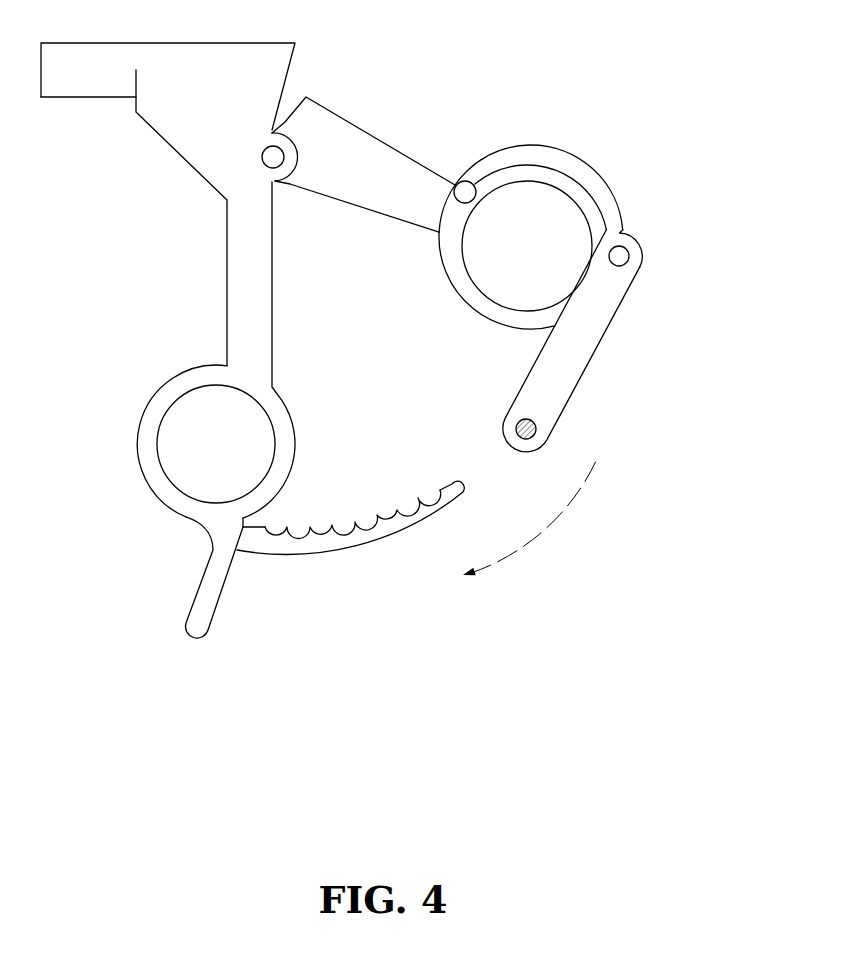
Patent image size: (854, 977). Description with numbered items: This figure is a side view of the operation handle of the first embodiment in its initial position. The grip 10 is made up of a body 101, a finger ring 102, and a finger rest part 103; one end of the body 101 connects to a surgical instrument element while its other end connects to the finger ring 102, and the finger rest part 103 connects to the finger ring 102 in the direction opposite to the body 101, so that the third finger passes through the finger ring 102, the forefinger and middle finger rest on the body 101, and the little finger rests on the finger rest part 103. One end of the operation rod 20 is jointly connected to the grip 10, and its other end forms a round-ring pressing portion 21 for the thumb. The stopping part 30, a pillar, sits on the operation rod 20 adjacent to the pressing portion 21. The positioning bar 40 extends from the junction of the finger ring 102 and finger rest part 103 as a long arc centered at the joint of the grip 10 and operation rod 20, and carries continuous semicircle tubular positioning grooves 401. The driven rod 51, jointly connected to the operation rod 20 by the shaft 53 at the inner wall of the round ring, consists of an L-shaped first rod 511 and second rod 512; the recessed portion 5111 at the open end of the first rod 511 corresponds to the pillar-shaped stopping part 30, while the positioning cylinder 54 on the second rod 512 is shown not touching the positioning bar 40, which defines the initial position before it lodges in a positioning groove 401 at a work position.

The grip 10 is at (82, 177).
The body 101 is at (207, 137).
The finger ring 102 is at (168, 395).
The finger rest part 103 is at (212, 592).
The operation rod 20 is at (315, 130).
The pressing portion 21 is at (477, 297).
The stopping part 30 is at (460, 186).
The positioning bar 40 is at (346, 557).
The positioning groove 401 is at (412, 513).
The driven rod 51 is at (662, 113).
The first rod 511 is at (571, 185).
The recessed portion 5111 is at (478, 184).
The second rod 512 is at (593, 298).
The shaft 53 is at (622, 259).
The positioning cylinder 54 is at (518, 425).